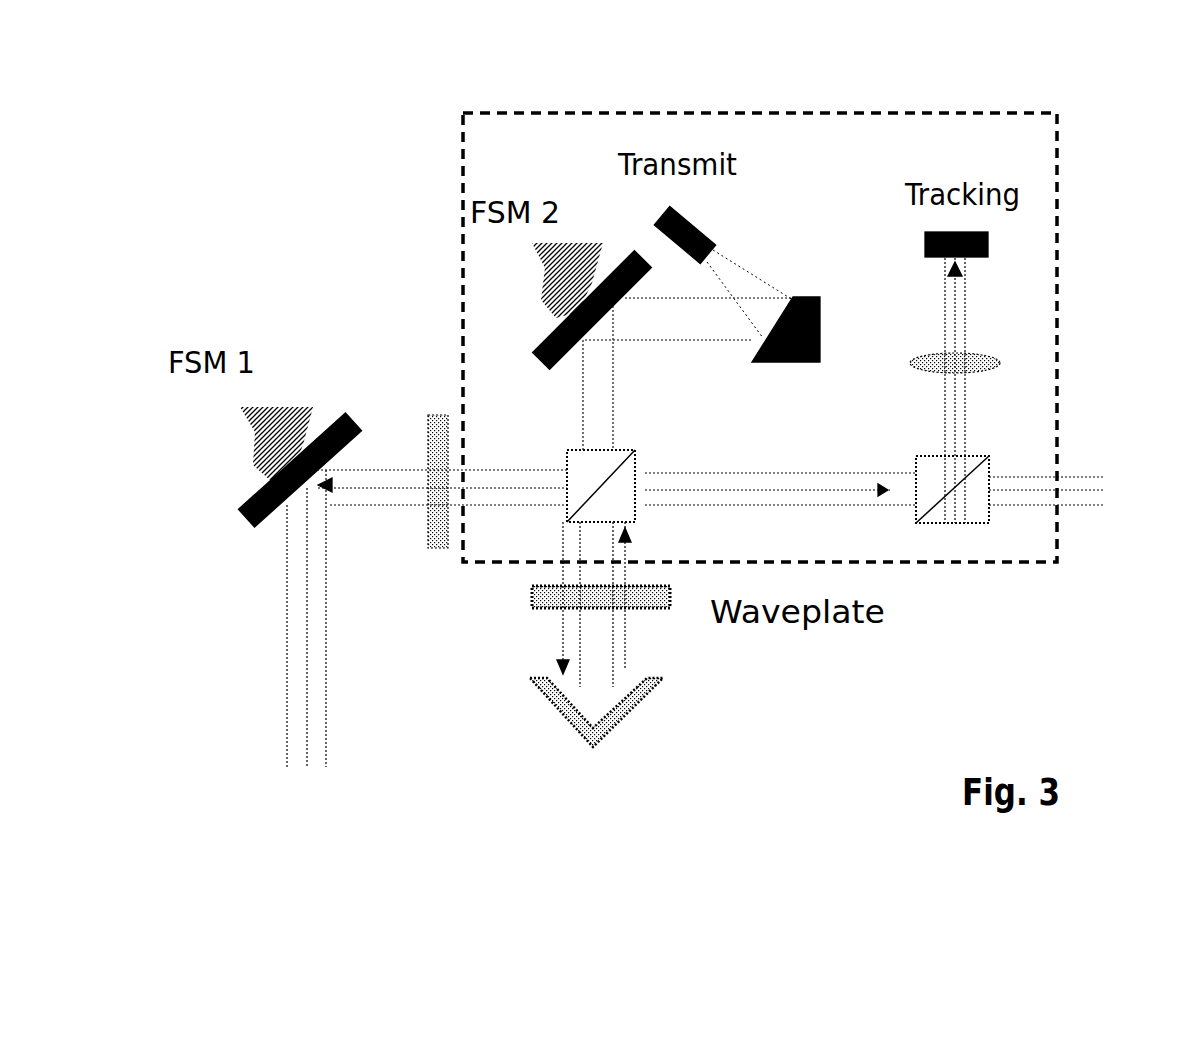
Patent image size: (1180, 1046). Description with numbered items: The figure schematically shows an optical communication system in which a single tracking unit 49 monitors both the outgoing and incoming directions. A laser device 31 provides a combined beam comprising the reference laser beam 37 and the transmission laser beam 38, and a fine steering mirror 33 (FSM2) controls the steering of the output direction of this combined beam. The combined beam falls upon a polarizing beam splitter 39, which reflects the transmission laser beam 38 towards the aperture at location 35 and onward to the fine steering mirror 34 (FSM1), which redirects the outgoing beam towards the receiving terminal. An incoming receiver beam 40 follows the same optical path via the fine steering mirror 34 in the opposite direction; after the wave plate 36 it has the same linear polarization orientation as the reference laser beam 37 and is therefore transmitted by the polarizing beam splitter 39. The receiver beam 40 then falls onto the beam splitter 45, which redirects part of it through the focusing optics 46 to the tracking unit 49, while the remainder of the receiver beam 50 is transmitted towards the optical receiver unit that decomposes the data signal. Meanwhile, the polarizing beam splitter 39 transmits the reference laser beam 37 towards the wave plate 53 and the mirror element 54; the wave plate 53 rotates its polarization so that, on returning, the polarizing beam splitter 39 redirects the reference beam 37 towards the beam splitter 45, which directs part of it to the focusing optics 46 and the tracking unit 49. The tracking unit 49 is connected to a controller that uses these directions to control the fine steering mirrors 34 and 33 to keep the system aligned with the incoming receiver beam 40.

The laser device 31 is at (697, 222).
The fine steering mirror (FSM2) 33 is at (537, 357).
The fine steering mirror (FSM1) 34 is at (250, 518).
The aperture location 35 is at (466, 461).
The wave plate 36 is at (440, 550).
The reference laser beam 37 is at (630, 654).
The transmission laser beam 38 is at (400, 505).
The polarizing beam splitter 39 is at (637, 463).
The incoming receiver beam 40 is at (293, 657).
The beam splitter 45 is at (969, 523).
The focusing optics 46 is at (1000, 363).
The tracking unit 49 is at (988, 245).
The remainder of receiver beam 50 is at (1080, 507).
The wave plate 53 is at (540, 609).
The mirror element 54 is at (552, 705).